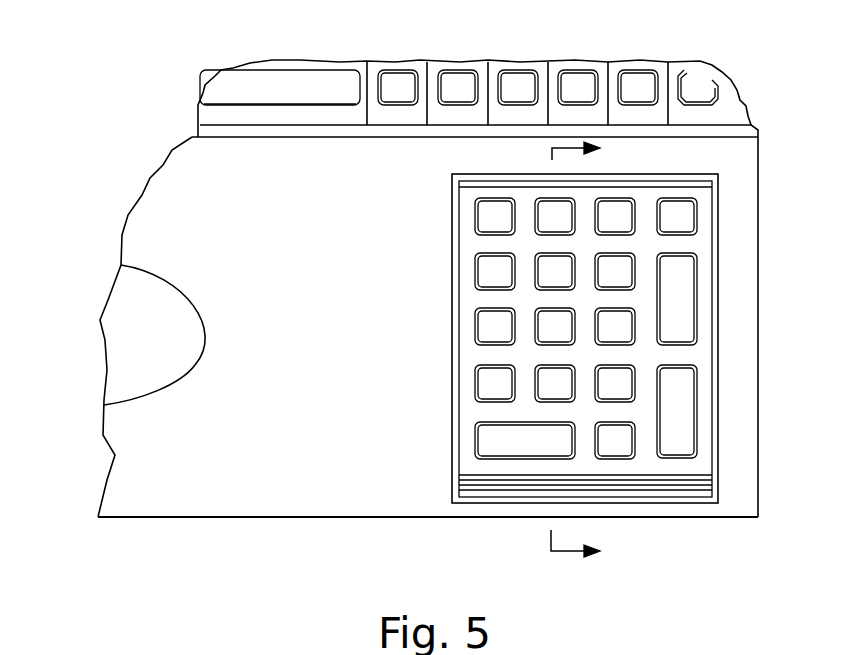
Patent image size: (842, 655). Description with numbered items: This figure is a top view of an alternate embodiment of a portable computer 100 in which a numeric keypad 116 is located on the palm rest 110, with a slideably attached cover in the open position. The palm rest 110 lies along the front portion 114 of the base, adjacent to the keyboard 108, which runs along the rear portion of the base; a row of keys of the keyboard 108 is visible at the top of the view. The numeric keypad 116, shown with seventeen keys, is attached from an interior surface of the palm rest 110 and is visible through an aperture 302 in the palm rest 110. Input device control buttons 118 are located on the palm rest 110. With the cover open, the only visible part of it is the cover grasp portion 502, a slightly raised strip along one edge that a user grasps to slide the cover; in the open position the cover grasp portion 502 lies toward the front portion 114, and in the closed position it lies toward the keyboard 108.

The portable computer 100 is at (404, 42).
The keyboard 108 is at (638, 80).
The palm rest 110 is at (735, 435).
The front portion of base 114 is at (742, 518).
The numeric keypad 116 is at (647, 412).
The input device control buttons 118 is at (160, 300).
The aperture 302 is at (714, 287).
The cover grasp portion 502 is at (490, 485).